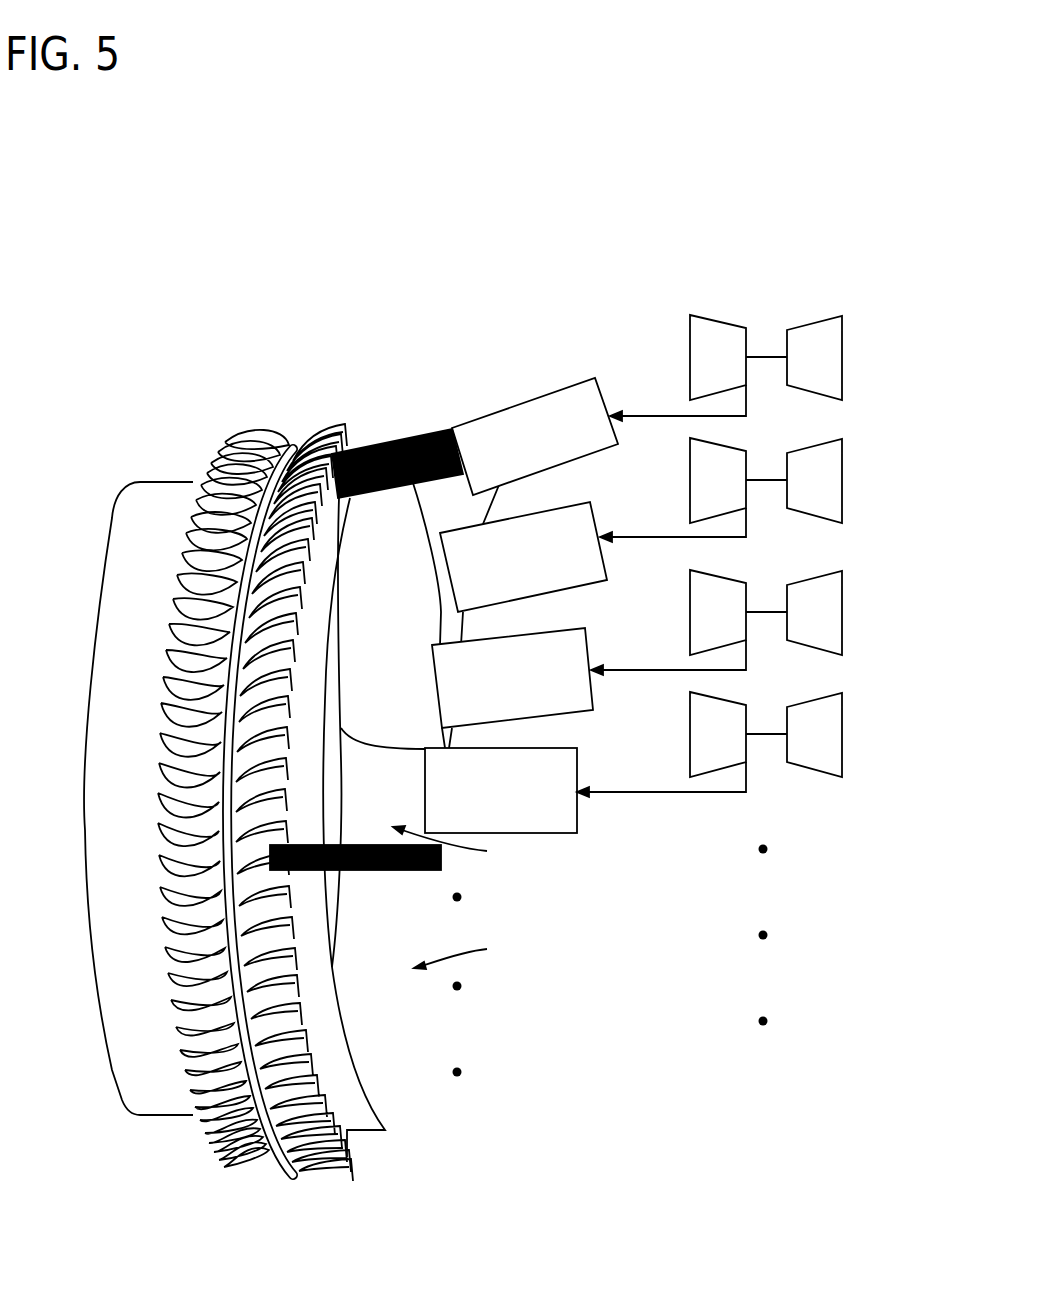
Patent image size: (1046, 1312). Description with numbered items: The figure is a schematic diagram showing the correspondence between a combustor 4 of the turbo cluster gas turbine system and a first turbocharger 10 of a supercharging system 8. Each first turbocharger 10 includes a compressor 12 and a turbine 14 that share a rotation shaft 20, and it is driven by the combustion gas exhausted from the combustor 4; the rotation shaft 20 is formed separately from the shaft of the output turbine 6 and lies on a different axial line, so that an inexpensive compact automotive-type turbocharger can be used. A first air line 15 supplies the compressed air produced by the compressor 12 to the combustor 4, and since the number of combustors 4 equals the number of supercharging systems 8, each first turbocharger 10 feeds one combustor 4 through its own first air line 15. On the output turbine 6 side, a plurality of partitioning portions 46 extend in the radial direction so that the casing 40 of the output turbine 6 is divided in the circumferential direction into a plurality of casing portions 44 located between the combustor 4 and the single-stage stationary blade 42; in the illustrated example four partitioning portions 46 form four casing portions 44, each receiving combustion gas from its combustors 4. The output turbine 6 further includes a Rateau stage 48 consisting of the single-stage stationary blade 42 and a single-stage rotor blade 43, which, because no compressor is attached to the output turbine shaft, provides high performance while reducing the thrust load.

The combustor 4 is at (534, 398).
The output turbine 6 is at (110, 530).
The supercharging system 8 is at (858, 258).
The first turbocharger 10 is at (779, 310).
The compressor 12 is at (689, 356).
The turbine 14 is at (843, 357).
The first air line 15 is at (652, 418).
The rotation shaft 20 is at (766, 360).
The casing 40 is at (423, 392).
The single-stage stationary blade 42 is at (328, 422).
The single-stage rotor blade 43 is at (250, 431).
The casing portion 44 is at (454, 897).
The partitioning portion 46 is at (371, 445).
The Rateau stage 48 is at (357, 347).